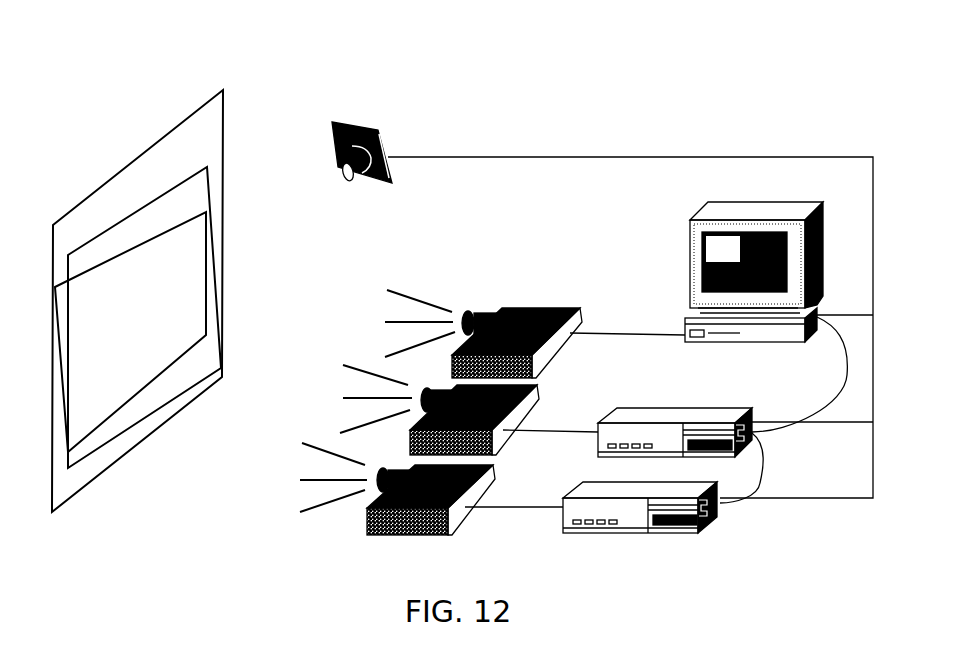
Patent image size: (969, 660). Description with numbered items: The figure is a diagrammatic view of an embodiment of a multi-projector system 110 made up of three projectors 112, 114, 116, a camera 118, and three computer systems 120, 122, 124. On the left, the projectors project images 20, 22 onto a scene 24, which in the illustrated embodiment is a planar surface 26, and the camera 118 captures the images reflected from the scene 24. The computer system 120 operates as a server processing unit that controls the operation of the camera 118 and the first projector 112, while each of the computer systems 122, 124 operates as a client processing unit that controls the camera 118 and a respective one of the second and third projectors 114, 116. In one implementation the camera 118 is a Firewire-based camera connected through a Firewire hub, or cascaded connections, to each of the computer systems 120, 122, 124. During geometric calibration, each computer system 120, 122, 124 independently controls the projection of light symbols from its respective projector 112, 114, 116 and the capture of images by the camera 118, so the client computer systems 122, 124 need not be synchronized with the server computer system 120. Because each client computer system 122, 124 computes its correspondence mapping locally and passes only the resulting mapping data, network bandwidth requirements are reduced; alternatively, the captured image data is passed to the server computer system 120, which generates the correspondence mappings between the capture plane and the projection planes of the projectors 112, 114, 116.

The image 20 is at (158, 380).
The image 22 is at (143, 213).
The scene 24 is at (56, 548).
The planar surface 26 is at (160, 145).
The multi-projector system 110 is at (745, 85).
The first projector 112 is at (532, 315).
The second projector 114 is at (540, 401).
The third projector 116 is at (487, 485).
The camera 118 is at (378, 140).
The computer system 120 is at (797, 205).
The computer system 122 is at (693, 412).
The computer system 124 is at (693, 528).